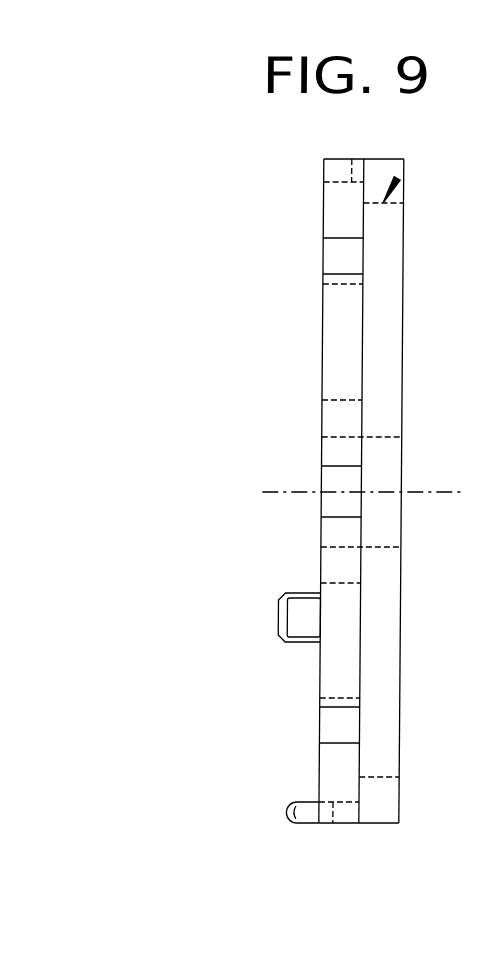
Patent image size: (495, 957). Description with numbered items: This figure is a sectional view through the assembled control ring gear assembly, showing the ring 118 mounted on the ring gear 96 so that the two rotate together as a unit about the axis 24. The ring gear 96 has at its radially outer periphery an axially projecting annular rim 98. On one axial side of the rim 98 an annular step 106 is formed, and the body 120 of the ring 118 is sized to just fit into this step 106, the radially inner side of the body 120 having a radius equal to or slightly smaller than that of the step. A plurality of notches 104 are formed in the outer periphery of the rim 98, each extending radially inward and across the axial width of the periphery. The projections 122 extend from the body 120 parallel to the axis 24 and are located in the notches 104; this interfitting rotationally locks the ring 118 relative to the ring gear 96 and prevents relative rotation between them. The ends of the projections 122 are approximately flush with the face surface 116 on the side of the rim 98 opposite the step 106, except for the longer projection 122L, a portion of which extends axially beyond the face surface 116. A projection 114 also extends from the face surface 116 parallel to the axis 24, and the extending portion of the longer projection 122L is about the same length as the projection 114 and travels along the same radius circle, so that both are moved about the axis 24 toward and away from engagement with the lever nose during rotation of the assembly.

The axis 24 is at (441, 492).
The ring gear 96 is at (340, 308).
The rim 98 is at (338, 678).
The notches 104 is at (353, 158).
The annular step 106 is at (406, 173).
The projection 114 is at (298, 617).
The face surface 116 is at (323, 365).
The ring 118 is at (394, 244).
The body 120 is at (389, 166).
The projections 122 is at (341, 170).
The longer projection 122L is at (308, 818).